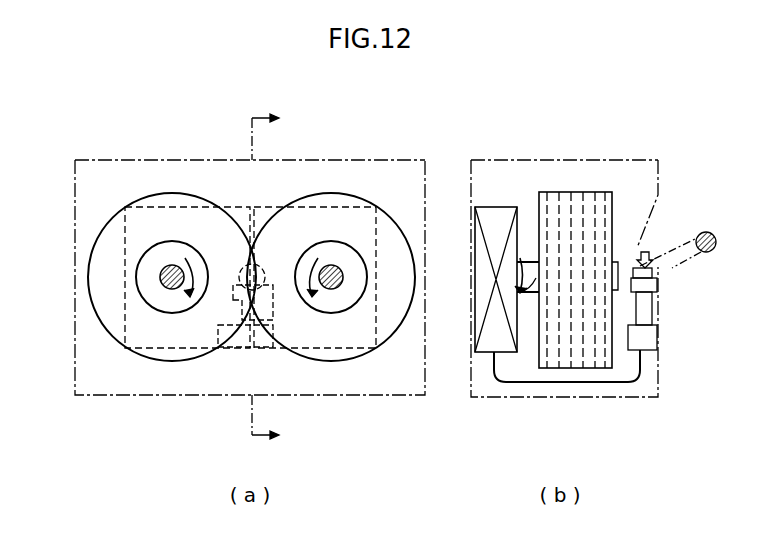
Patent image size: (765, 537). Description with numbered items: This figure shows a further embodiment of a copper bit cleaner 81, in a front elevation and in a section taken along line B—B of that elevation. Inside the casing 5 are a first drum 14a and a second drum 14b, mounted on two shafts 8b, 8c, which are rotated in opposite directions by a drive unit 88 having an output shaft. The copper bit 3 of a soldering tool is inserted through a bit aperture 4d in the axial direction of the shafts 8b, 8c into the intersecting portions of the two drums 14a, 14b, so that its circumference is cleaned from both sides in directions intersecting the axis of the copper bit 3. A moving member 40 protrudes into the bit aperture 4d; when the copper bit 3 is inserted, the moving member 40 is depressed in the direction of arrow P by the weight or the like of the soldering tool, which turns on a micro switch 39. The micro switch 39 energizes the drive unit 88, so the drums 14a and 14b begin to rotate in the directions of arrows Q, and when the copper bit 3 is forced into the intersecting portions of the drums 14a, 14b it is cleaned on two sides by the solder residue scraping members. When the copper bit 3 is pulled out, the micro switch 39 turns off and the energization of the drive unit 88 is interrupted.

The copper bit cleaner 81 is at (80, 125).
The casing 5 is at (403, 160).
The drive unit 88 is at (157, 207).
The second drum 14b is at (188, 191).
The first drum 14a is at (343, 191).
The shaft 8b is at (161, 284).
The shaft 8c is at (333, 290).
The bit aperture 4d is at (256, 265).
The moving member 40 is at (233, 298).
The micro switch 39 is at (245, 340).
The arrows Q is at (212, 290).
The arrow P is at (593, 287).
The copper bit 3 is at (675, 268).
The line B— B is at (255, 282).